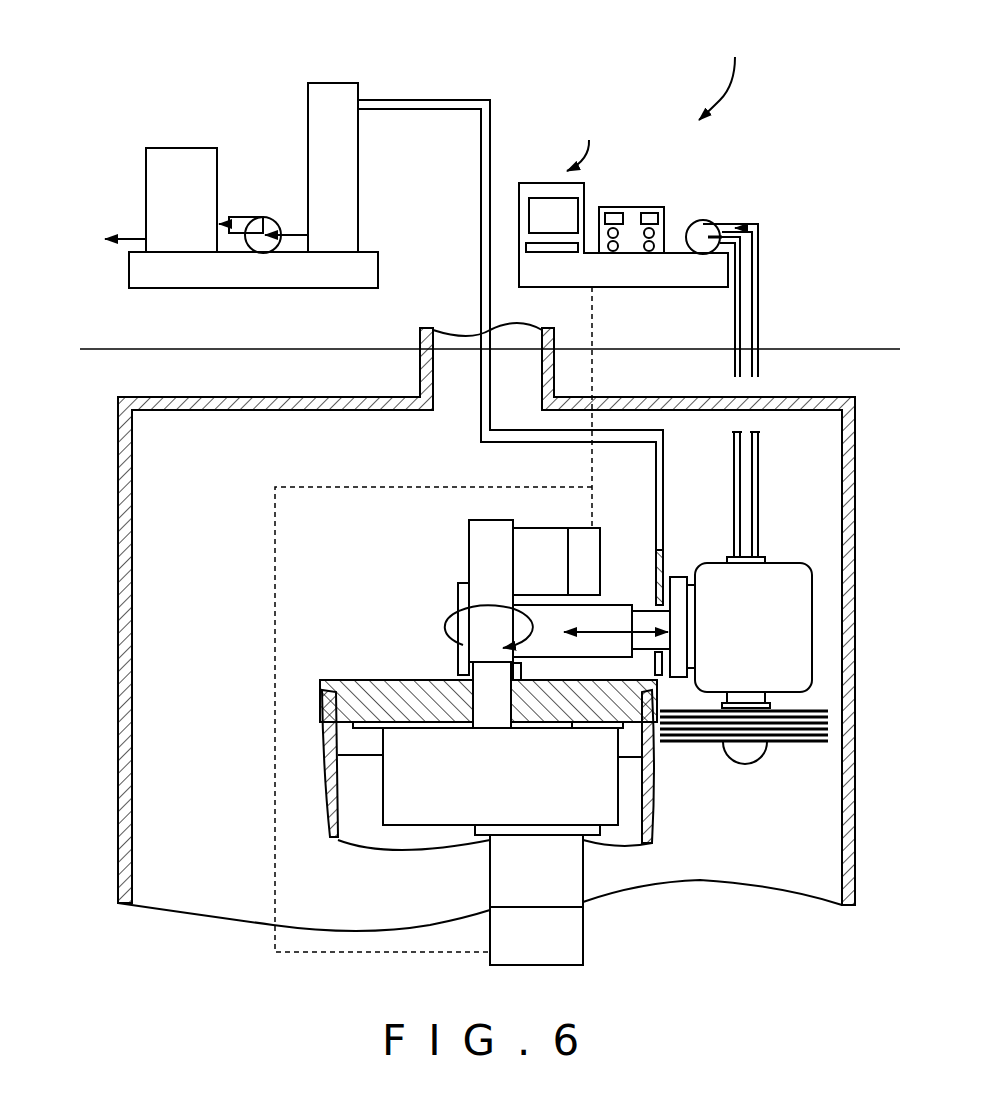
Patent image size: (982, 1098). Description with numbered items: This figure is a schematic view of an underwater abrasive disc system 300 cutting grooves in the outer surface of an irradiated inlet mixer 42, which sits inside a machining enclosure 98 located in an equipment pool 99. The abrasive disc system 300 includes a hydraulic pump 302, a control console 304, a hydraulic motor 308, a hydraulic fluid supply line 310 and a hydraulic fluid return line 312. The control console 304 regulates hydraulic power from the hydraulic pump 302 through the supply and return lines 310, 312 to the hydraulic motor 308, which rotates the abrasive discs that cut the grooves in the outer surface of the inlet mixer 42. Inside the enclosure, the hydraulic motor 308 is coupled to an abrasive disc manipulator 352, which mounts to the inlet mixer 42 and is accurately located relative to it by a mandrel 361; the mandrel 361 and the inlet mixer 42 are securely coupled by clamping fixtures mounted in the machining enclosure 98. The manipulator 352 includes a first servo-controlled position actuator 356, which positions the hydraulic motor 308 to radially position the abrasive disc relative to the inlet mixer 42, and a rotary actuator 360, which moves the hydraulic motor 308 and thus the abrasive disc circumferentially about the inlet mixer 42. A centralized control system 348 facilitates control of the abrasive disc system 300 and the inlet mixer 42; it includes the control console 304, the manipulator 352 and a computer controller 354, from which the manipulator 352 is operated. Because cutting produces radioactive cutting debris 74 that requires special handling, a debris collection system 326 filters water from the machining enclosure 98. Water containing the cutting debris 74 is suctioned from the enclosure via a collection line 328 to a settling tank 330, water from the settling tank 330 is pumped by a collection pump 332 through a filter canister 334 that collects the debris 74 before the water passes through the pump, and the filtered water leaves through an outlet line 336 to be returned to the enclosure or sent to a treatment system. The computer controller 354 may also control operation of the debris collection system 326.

The irradiated inlet mixer 42 is at (332, 843).
The cutting debris 74 is at (655, 582).
The machining enclosure 98 is at (365, 394).
The equipment pool 99 is at (490, 364).
The abrasive disc system 300 is at (732, 74).
The hydraulic pump 302 is at (708, 215).
The control console 304 is at (647, 204).
The hydraulic motor 308 is at (707, 560).
The hydraulic fluid supply line 310 is at (758, 330).
The hydraulic fluid return line 312 is at (735, 340).
The debris collection system 326 is at (255, 126).
The collection line 328 is at (492, 115).
The settling tank 330 is at (349, 81).
The collection pump 332 is at (248, 216).
The filter canister 334 is at (146, 158).
The outlet line 336 is at (133, 239).
The centralized control system 348 is at (541, 183).
The abrasive disc manipulator 352 is at (426, 577).
The computer controller 354 is at (590, 143).
The first servo-controlled position actuator 356 is at (470, 517).
The rotary actuator 360 is at (587, 936).
The mandrel 361 is at (385, 680).